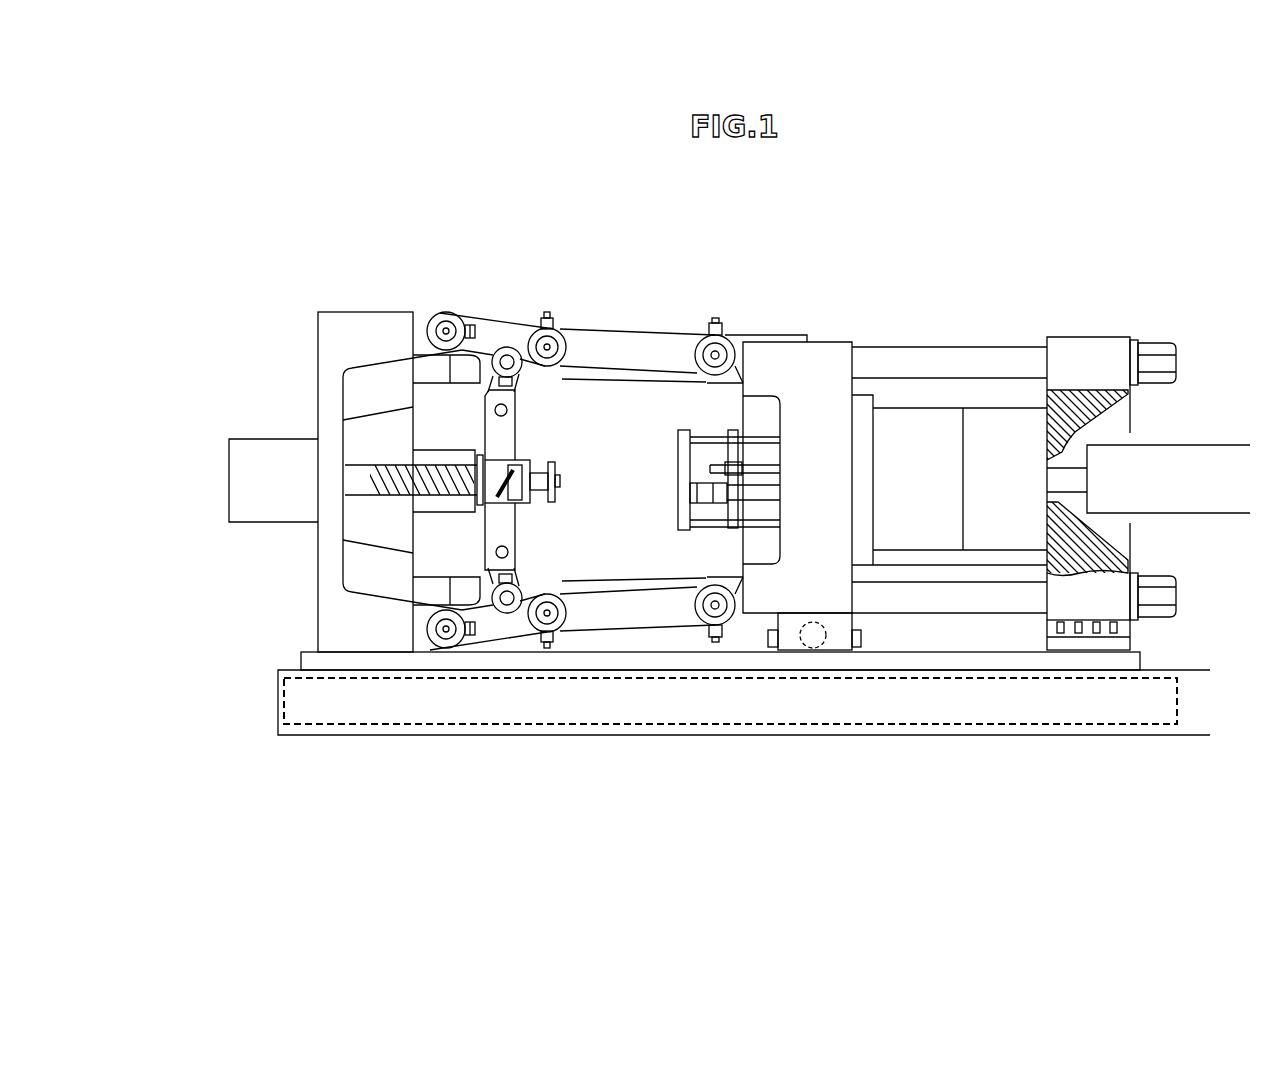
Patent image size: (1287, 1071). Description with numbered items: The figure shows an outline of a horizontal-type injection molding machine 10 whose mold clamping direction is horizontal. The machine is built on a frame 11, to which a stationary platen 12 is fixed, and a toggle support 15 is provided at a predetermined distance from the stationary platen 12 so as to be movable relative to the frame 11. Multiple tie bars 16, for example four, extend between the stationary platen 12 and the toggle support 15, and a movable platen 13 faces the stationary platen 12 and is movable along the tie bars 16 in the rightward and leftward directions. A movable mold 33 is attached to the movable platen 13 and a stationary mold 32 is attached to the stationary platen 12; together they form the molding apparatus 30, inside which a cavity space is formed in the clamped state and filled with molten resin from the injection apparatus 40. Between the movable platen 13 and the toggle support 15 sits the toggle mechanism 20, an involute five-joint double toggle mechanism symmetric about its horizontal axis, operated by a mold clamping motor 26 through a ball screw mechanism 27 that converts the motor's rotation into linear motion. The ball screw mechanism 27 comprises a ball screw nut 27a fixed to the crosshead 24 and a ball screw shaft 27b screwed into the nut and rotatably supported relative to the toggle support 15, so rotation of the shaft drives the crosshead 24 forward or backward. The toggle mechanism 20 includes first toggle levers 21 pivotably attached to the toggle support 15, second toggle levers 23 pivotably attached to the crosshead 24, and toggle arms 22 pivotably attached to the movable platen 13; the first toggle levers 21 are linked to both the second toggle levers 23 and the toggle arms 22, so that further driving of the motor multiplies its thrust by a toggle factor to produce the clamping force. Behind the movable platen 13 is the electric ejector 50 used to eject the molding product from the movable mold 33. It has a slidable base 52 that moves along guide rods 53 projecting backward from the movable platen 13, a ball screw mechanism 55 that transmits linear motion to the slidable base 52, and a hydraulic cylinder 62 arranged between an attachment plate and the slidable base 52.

The injection molding machine 10 is at (351, 196).
The frame 11 is at (278, 700).
The stationary platen 12 is at (1085, 352).
The movable platen 13 is at (783, 358).
The toggle support 15 is at (366, 335).
The tie bars 16 is at (875, 350).
The toggle mechanism 20 is at (598, 316).
The first toggle levers 21 is at (494, 332).
The toggle arms 22 is at (653, 345).
The second toggle levers 23 is at (516, 388).
The crosshead 24 is at (514, 444).
The mold clamping motor 26 is at (229, 478).
The ball screw mechanism 27 is at (486, 546).
The ball screw nut 27a is at (494, 496).
The ball screw shaft 27b is at (424, 492).
The molding apparatus 30 is at (998, 276).
The stationary mold 32 is at (998, 432).
The movable mold 33 is at (936, 432).
The injection apparatus 40 is at (1211, 462).
The electric ejector 50 is at (668, 462).
The slidable base 52 is at (732, 432).
The guide rods 53 is at (712, 438).
The ball screw mechanism 55 is at (752, 466).
The hydraulic cylinder 62 is at (680, 495).